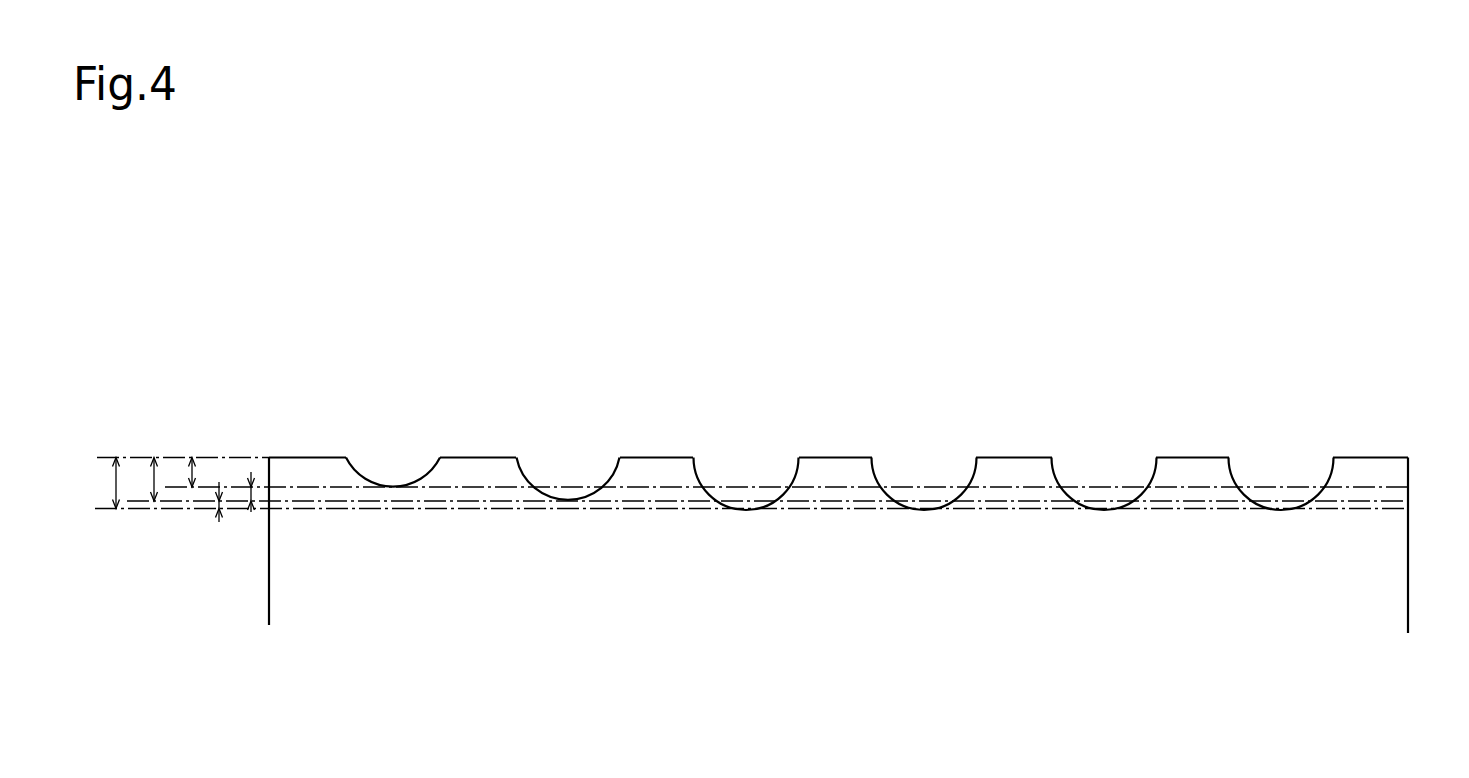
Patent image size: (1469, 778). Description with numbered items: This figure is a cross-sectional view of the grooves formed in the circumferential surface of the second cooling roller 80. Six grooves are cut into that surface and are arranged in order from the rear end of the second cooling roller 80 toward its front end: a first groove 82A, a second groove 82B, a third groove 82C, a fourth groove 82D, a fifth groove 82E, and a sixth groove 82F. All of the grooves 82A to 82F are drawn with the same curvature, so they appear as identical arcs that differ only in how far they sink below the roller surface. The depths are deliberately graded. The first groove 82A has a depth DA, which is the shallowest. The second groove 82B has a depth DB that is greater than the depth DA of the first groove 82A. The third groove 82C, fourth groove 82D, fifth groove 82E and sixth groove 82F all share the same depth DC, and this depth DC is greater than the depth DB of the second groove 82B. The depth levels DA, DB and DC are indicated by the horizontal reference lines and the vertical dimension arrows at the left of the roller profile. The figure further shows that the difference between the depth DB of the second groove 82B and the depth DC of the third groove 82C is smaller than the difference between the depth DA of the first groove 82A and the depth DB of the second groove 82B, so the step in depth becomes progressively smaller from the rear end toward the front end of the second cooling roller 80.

The second cooling roller 80 is at (1410, 472).
The first groove 82A is at (435, 472).
The second groove 82B is at (615, 480).
The third groove 82C is at (793, 487).
The fourth groove 82D is at (975, 480).
The fifth groove 82E is at (1153, 480).
The sixth groove 82F is at (1332, 480).
The depth of the first groove DA is at (188, 472).
The depth of the second groove DB is at (152, 476).
The depth of the third to sixth grooves DC is at (108, 477).